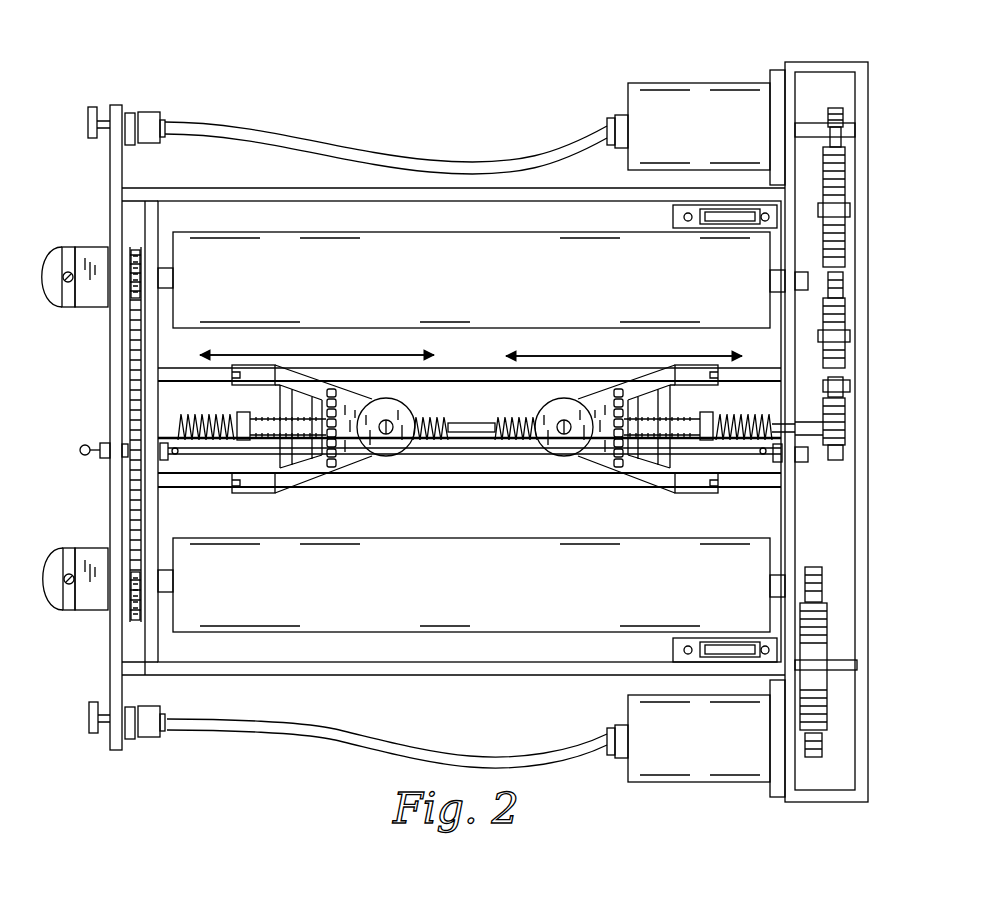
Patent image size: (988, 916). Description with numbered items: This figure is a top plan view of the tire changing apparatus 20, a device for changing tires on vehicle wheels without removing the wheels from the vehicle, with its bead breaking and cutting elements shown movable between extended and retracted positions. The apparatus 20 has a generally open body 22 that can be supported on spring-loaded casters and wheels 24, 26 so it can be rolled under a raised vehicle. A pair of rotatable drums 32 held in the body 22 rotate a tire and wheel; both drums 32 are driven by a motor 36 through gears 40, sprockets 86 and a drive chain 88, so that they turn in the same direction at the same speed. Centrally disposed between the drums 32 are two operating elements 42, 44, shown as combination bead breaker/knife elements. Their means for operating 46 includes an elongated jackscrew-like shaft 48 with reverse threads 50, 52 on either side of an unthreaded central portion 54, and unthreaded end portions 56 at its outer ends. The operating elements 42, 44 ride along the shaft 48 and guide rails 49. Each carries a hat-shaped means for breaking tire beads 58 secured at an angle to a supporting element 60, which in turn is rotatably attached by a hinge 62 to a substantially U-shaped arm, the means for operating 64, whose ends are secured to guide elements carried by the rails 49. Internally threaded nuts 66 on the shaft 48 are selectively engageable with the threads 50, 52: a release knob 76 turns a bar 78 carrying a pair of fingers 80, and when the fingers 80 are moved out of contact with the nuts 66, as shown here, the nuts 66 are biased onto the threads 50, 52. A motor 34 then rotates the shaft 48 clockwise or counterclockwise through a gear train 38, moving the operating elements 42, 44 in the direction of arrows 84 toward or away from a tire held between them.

The tire changing apparatus 20 is at (446, 110).
The body 22 is at (218, 665).
The caster 24 is at (727, 212).
The wheel 26 is at (70, 244).
The drum 32 is at (485, 294).
The motor 34 is at (683, 143).
The motor 36 is at (683, 749).
The gear train 38 is at (856, 318).
The gears 40 is at (836, 636).
The operating element 42 is at (357, 476).
The operating element 44 is at (582, 471).
The means for operating 46 is at (474, 443).
The shaft 48 is at (478, 425).
The guide rails 49 is at (170, 372).
The threads 50 is at (448, 462).
The threads 52 is at (513, 442).
The unthreaded central portion 54 is at (460, 420).
The unthreaded end portion 56 is at (167, 426).
The means for breaking tire beads 58 is at (395, 405).
The supporting element 60 is at (352, 397).
The hinge 62 is at (336, 388).
The means for operating 64 is at (294, 476).
The internally threaded nut 66 is at (238, 411).
The release knob 76 is at (83, 456).
The bar 78 is at (208, 455).
The fingers 80 is at (187, 462).
The arrows 84 is at (275, 355).
The sprockets 86 is at (130, 307).
The drive chain 88 is at (133, 358).